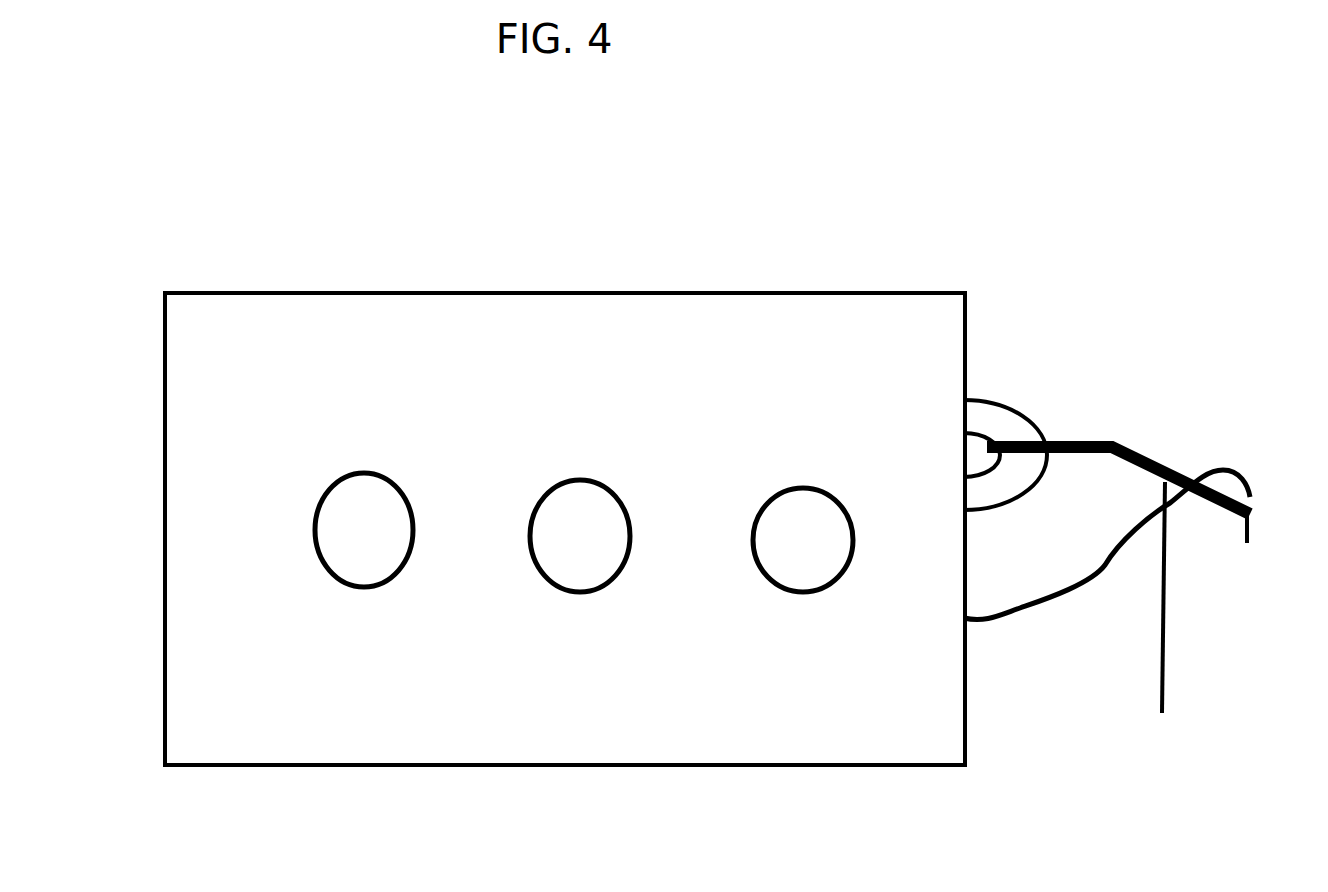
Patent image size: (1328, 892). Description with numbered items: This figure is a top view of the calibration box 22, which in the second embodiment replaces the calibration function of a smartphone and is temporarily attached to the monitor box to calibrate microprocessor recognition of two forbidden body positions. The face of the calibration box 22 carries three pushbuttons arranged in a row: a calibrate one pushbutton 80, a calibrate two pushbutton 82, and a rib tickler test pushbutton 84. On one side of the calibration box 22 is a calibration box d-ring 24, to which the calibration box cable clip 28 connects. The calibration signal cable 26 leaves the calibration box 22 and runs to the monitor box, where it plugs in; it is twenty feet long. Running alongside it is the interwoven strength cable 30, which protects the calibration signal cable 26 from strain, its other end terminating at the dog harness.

The calibration box 22 is at (228, 352).
The calibration box d-ring 24 is at (1012, 433).
The calibration signal cable 26 is at (1045, 632).
The calibration box cable clip 28 is at (1065, 440).
The interwoven strength cable 30 is at (1169, 632).
The calibrate 1 pushbutton 80 is at (362, 558).
The calibrate 2 pushbutton 82 is at (578, 565).
The rib tickler test pushbutton 84 is at (795, 557).